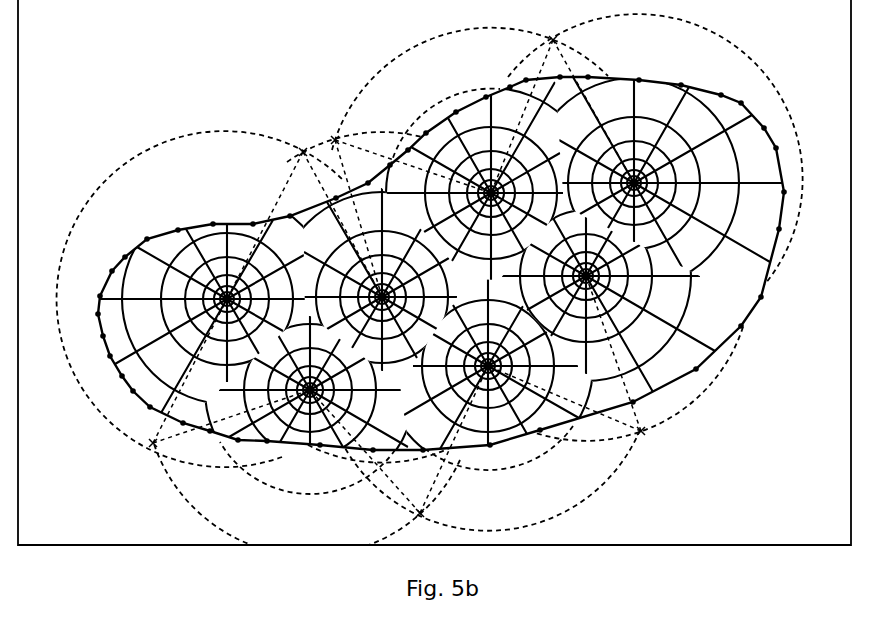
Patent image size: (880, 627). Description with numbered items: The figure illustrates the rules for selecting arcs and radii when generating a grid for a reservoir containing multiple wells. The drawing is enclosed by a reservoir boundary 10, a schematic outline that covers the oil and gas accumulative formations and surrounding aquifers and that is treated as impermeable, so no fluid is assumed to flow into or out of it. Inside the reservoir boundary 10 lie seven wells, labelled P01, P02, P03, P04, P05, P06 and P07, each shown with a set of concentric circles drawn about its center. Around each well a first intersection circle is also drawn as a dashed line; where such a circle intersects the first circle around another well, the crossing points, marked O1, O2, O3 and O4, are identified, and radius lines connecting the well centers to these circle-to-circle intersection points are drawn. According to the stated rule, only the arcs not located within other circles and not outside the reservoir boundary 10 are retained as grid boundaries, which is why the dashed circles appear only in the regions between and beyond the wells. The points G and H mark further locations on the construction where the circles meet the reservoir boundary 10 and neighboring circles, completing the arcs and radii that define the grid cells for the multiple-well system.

The reservoir boundary 10 is at (724, 354).
The intersection point O1 is at (304, 223).
The intersection point O2 is at (411, 211).
The intersection point O3 is at (562, 102).
The intersection point O4 is at (578, 367).
The well G is at (229, 373).
The boundary point H is at (369, 433).
The source point P01 is at (216, 303).
The source point P02 is at (491, 190).
The source point P03 is at (488, 366).
The source point P04 is at (382, 295).
The source point P05 is at (598, 281).
The source point P06 is at (655, 182).
The source point P07 is at (310, 390).